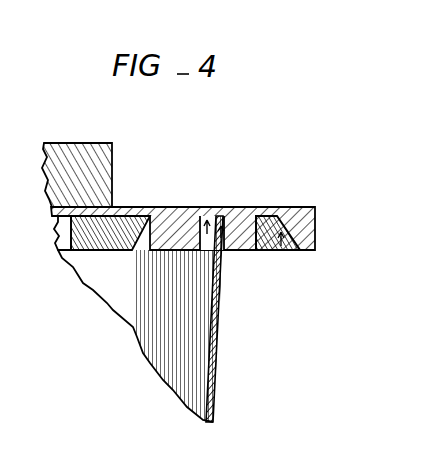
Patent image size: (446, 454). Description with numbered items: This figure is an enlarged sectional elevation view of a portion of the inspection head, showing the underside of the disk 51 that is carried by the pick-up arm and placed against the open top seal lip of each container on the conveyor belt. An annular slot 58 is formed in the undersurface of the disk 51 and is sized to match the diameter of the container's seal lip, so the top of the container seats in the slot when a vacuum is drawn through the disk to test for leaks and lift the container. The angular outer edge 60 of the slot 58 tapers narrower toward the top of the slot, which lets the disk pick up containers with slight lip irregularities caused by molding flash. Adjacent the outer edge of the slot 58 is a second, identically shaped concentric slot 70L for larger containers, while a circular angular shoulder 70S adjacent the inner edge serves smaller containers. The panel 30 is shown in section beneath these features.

The panel 30 is at (224, 327).
The disk 51 is at (201, 208).
The annular slot 58 is at (207, 234).
The angular outer edge 60 is at (221, 238).
The circular angular shoulder 70S is at (123, 251).
The slot 70L is at (273, 251).